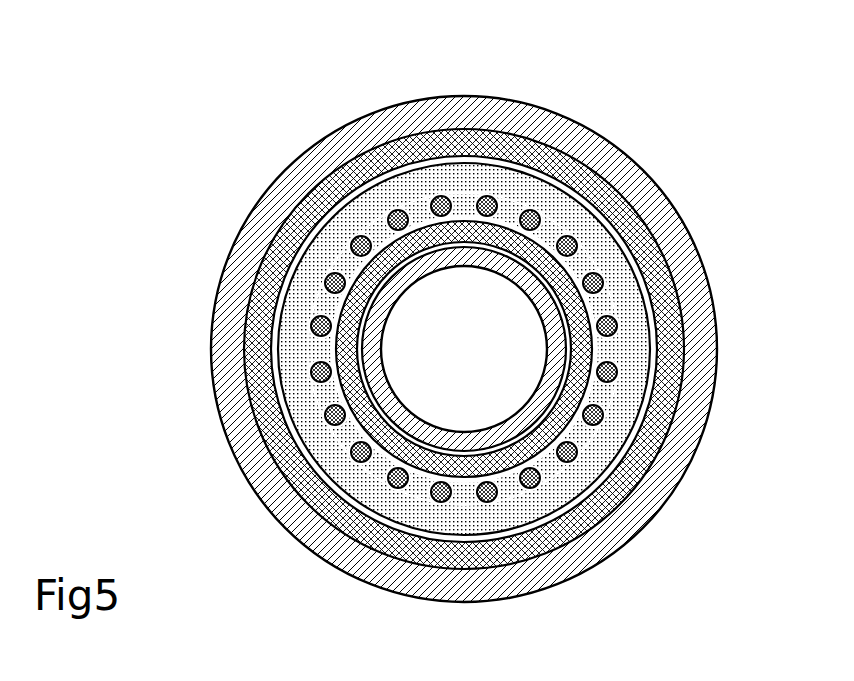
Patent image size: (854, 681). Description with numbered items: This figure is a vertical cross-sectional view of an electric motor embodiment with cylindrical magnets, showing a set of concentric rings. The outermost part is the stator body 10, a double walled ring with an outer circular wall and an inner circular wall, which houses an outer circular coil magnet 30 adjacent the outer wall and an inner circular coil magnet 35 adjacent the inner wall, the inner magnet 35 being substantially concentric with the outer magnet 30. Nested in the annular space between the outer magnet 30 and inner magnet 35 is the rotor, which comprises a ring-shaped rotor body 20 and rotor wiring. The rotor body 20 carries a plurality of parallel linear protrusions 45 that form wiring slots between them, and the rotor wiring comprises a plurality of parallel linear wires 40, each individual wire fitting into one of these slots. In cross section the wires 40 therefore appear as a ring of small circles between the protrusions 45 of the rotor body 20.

The stator body 10 is at (533, 101).
The rotor body 20 is at (592, 258).
The outer circular coil magnet 30 is at (586, 163).
The inner circular coil magnet 35 is at (630, 275).
The parallel linear wires 40 is at (622, 365).
The parallel linear protrusions 45 is at (648, 352).